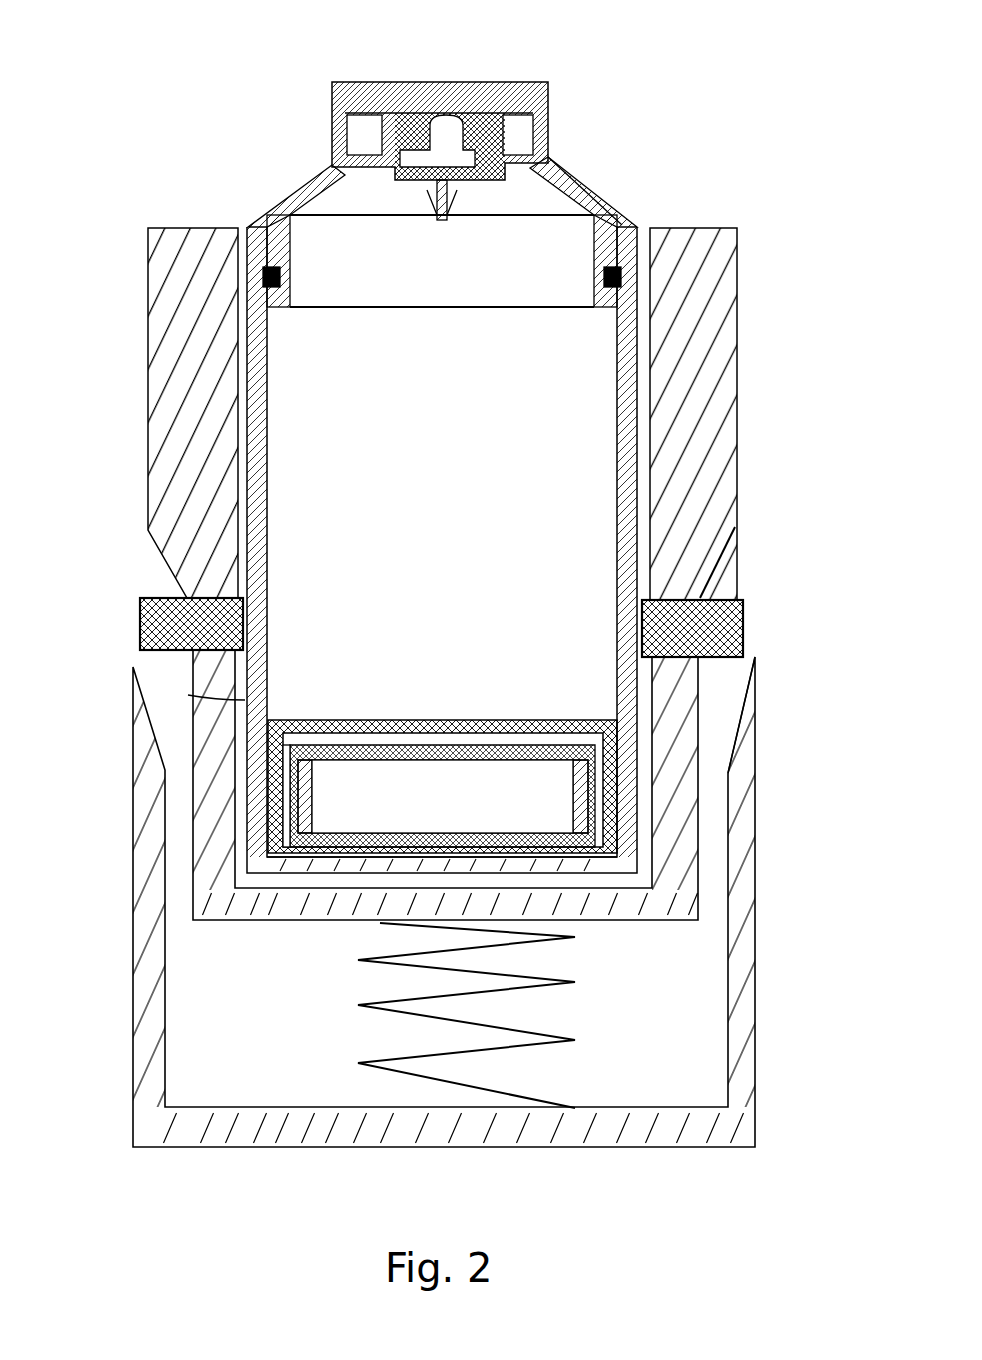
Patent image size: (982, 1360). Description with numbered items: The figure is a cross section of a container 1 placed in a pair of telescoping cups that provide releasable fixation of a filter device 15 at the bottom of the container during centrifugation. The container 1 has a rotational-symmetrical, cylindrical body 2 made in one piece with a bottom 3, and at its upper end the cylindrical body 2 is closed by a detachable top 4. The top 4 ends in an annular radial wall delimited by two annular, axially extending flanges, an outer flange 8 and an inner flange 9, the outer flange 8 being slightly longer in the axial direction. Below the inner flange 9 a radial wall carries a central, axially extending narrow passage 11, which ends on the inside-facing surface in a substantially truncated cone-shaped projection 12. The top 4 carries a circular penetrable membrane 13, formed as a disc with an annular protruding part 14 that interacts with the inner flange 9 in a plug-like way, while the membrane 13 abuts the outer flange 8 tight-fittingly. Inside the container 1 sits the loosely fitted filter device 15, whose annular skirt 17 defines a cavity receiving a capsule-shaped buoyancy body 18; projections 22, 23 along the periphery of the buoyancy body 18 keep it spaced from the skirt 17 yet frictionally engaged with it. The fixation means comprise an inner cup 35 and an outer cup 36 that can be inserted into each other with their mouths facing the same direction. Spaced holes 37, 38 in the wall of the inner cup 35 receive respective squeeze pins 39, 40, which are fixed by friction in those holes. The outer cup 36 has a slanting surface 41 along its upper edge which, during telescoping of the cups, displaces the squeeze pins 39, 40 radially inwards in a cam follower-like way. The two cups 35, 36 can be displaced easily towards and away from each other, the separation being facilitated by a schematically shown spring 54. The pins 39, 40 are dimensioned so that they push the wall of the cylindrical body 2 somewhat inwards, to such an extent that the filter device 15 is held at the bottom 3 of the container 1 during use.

The container 1 is at (628, 220).
The cylindrical body 2 is at (620, 467).
The bottom 3 is at (612, 868).
The detachable top 4 is at (594, 185).
The outer flange 8 is at (474, 93).
The inner flange 9 is at (495, 125).
The narrow passage 11 is at (437, 205).
The truncated cone-shaped projection 12 is at (427, 192).
The penetrable membrane 13 is at (462, 100).
The annular protruding part 14 is at (398, 150).
The filter device 15 is at (551, 712).
The annular skirt 17 is at (610, 788).
The buoyancy body 18 is at (567, 822).
The projection 22 is at (590, 765).
The projection 23 is at (290, 763).
The inner cup 35 is at (723, 400).
The outer cup 36 is at (737, 927).
The hole 37 is at (205, 655).
The hole 38 is at (665, 663).
The squeeze pin 39 is at (152, 625).
The squeeze pin 40 is at (727, 628).
The slanting surface 41 is at (725, 718).
The spring 54 is at (392, 1073).